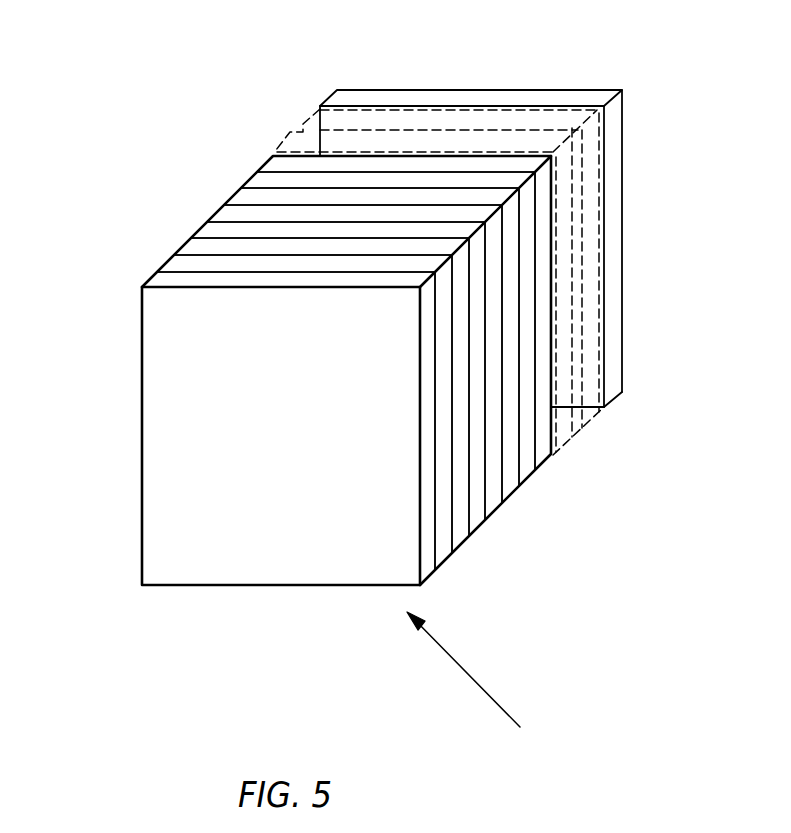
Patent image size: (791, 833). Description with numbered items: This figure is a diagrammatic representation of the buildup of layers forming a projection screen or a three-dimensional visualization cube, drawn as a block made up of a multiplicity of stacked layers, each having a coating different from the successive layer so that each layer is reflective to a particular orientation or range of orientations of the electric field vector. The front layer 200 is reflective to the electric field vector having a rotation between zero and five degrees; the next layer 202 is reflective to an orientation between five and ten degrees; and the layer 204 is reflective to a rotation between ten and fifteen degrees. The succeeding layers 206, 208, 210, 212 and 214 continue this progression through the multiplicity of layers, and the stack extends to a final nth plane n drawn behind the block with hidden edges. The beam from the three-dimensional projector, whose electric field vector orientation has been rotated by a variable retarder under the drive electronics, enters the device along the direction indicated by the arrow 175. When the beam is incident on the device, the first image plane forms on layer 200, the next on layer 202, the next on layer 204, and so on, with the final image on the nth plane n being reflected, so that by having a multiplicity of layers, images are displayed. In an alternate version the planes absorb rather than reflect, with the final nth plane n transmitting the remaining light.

The layer 200 is at (185, 277).
The layer 202 is at (193, 262).
The layer 204 is at (437, 247).
The fourth plate layer 206 is at (248, 230).
The fifth plate layer 208 is at (463, 215).
The sixth plate layer 210 is at (263, 196).
The seventh plate layer 212 is at (512, 178).
The eighth plate layer 214 is at (292, 165).
The nth plate layer n is at (598, 90).
The viewing direction arrow 175 is at (496, 689).